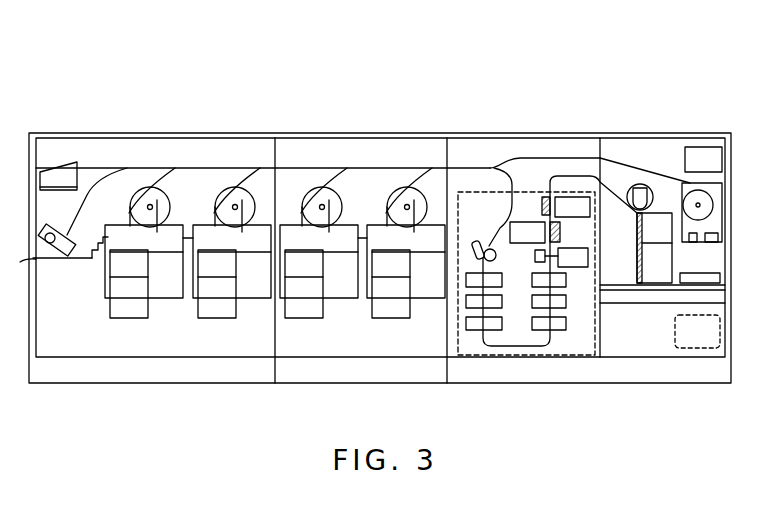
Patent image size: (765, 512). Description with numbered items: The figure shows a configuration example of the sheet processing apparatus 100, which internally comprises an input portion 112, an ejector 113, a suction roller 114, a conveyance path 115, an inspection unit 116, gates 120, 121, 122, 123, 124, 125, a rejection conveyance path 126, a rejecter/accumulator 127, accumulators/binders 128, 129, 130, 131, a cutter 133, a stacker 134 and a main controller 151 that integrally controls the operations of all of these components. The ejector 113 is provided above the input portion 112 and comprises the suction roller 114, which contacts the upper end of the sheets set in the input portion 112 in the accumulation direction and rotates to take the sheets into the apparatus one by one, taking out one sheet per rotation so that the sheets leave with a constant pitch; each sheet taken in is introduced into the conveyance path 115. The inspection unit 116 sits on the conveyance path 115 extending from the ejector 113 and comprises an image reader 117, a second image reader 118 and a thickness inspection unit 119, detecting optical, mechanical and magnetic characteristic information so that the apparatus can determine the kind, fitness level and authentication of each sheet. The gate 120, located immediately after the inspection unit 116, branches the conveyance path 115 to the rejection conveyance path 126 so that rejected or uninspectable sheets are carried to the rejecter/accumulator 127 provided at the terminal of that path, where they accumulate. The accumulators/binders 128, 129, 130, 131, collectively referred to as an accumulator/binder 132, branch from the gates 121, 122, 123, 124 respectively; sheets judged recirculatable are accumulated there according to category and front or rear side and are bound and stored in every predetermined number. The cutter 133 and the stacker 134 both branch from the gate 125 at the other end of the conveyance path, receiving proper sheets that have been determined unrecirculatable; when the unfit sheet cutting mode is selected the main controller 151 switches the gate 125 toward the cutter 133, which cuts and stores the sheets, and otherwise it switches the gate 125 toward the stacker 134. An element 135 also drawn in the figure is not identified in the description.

The sheet processing apparatus 100 is at (449, 78).
The input portion 112 is at (650, 292).
The ejector 113 is at (640, 180).
The suction roller 114 is at (623, 182).
The conveyance path 115 is at (604, 197).
The inspection unit 116 is at (477, 358).
The image reader 117 is at (525, 222).
The image reader 118 is at (570, 200).
The thickness inspection unit 119 is at (478, 240).
The gate 120 is at (510, 182).
The gate 121 is at (433, 168).
The gate 122 is at (348, 168).
The gate 123 is at (262, 168).
The gate 124 is at (175, 168).
The gate 125 is at (120, 168).
The rejection conveyance path 126 is at (667, 167).
The rejecter/accumulator 127 is at (700, 200).
The accumulator/binder 128 is at (418, 292).
The accumulator/binder 129 is at (337, 292).
The accumulator/binder 130 is at (248, 292).
The accumulator/binder 131 is at (167, 292).
The accumulator/binder 132 is at (292, 182).
The cutter 133 is at (70, 262).
The stacker 134 is at (53, 164).
The memory 135 is at (578, 268).
The main controller 151 is at (695, 350).